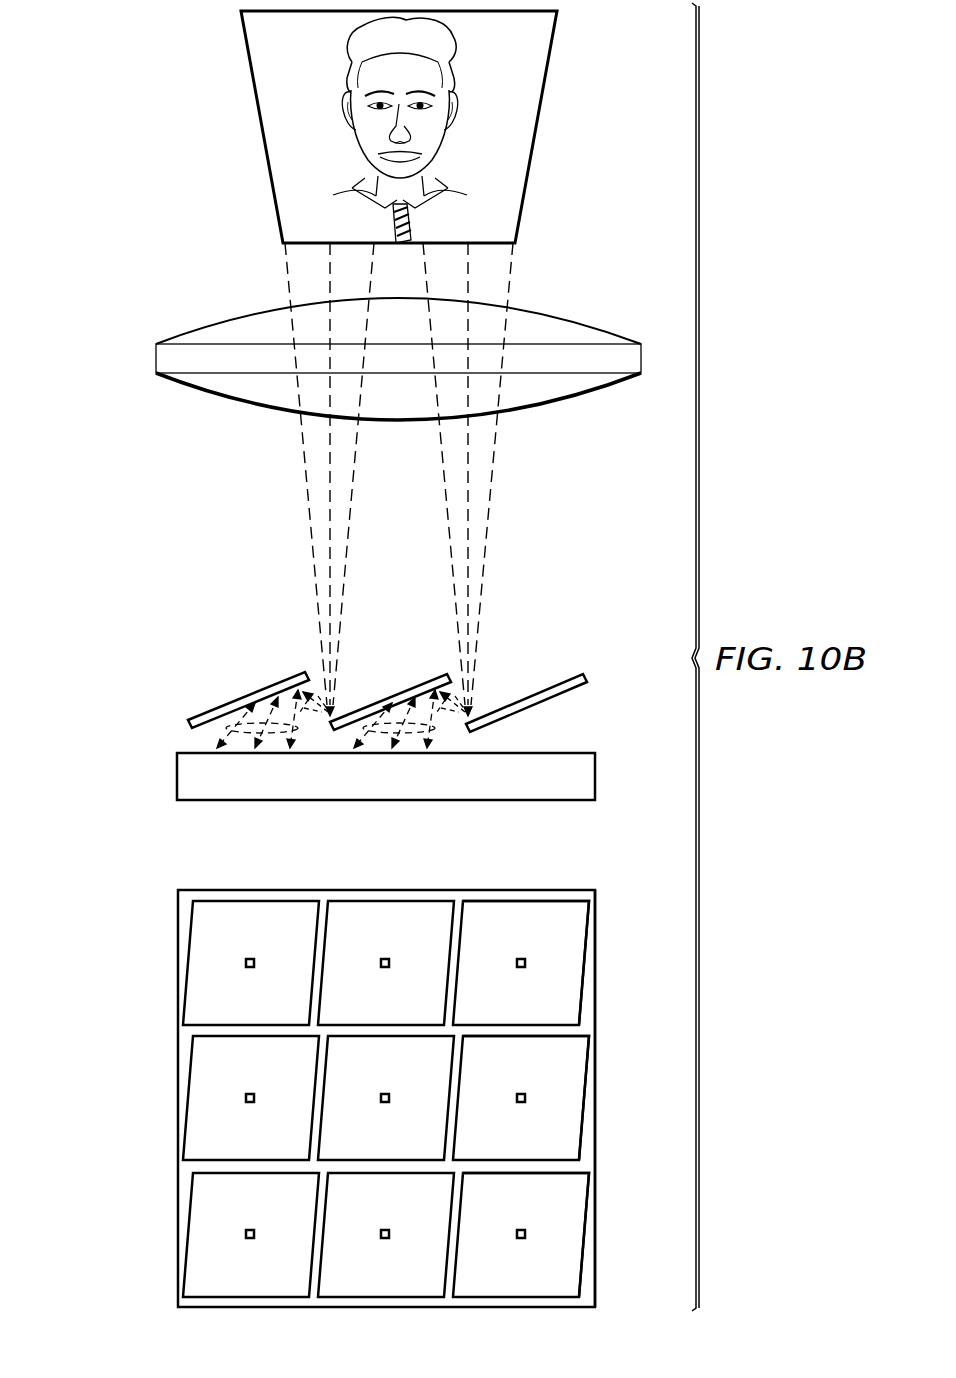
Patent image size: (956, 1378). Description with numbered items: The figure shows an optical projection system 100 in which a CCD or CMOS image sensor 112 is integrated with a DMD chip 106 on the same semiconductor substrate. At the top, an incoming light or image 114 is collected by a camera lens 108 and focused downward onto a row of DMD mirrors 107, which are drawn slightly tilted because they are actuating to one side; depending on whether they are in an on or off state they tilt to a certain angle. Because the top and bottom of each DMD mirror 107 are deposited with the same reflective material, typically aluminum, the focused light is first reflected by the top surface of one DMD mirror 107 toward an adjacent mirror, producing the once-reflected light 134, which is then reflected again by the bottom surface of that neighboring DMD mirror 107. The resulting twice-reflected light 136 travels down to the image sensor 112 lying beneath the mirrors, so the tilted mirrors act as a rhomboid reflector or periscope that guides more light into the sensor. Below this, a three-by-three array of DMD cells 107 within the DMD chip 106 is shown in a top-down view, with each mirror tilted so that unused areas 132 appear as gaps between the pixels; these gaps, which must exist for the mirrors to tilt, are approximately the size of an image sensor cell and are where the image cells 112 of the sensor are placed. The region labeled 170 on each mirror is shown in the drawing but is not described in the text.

The optical projection system 100 is at (98, 172).
The incoming light or image 114 is at (537, 130).
The camera lens 108 is at (573, 320).
The DMD mirror 107 is at (220, 703).
The once-reflected light 134 is at (318, 692).
The twice-reflected light 136 is at (246, 733).
The image sensor 112 is at (597, 775).
The DMD chip 106 is at (98, 1052).
The mirror surface 170 is at (577, 927).
The unused area 132 is at (590, 992).